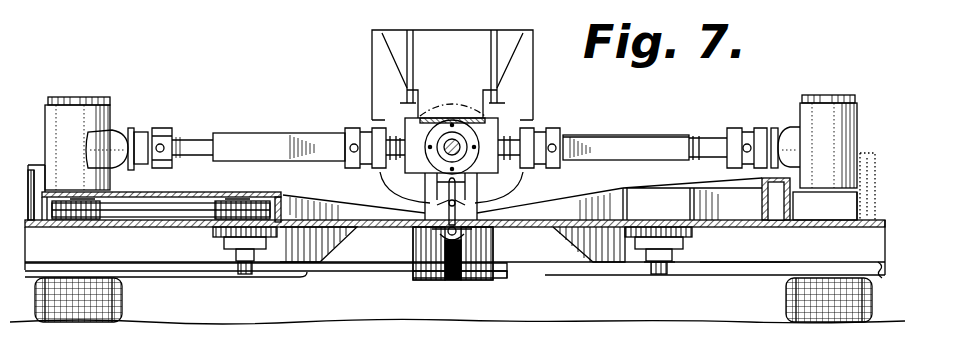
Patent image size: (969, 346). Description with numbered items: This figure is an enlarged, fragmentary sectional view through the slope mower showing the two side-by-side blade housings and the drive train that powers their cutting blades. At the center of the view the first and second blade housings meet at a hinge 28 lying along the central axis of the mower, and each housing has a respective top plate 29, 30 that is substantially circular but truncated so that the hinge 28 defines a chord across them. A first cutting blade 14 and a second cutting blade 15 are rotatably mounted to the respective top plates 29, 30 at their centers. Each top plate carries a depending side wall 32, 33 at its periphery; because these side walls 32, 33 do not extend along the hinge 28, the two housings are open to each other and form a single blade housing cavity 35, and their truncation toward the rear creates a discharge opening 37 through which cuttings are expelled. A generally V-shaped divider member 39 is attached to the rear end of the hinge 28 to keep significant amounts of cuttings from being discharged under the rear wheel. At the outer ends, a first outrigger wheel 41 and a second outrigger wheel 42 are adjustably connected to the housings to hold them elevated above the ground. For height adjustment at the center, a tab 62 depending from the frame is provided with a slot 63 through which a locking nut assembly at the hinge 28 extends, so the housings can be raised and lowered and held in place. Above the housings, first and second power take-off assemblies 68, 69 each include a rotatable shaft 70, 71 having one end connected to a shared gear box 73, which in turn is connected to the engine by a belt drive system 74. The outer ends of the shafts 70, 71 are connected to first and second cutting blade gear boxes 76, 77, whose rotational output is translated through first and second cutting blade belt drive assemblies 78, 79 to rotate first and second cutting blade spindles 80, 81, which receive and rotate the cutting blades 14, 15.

The first cutting blade 14 is at (676, 262).
The second cutting blade 15 is at (355, 271).
The hinge 28 is at (440, 232).
The first top plate 29 is at (742, 227).
The second top plate 30 is at (195, 228).
The first depending side wall 32 is at (879, 270).
The second depending side wall 33 is at (332, 244).
The blade housing cavity 35 is at (770, 273).
The discharge opening 37 is at (544, 280).
The divider member 39 is at (428, 278).
The first outrigger wheel 41 is at (786, 307).
The second outrigger wheel 42 is at (122, 308).
The tab 62 is at (400, 201).
The slot 63 is at (478, 182).
The first power take-off assembly 68 is at (660, 137).
The second power take-off assembly 69 is at (318, 140).
The rotatable shaft 70 is at (616, 138).
The rotatable shaft 71 is at (222, 135).
The gear box 73 is at (478, 118).
The belt drive system 74 is at (442, 102).
The first cutting blade gear box 76 is at (800, 108).
The second cutting blade gear box 77 is at (110, 108).
The first cutting blade belt drive assembly 78 is at (617, 192).
The second cutting blade belt drive assembly 79 is at (152, 217).
The first cutting blade spindle 80 is at (661, 276).
The second cutting blade spindle 81 is at (244, 276).